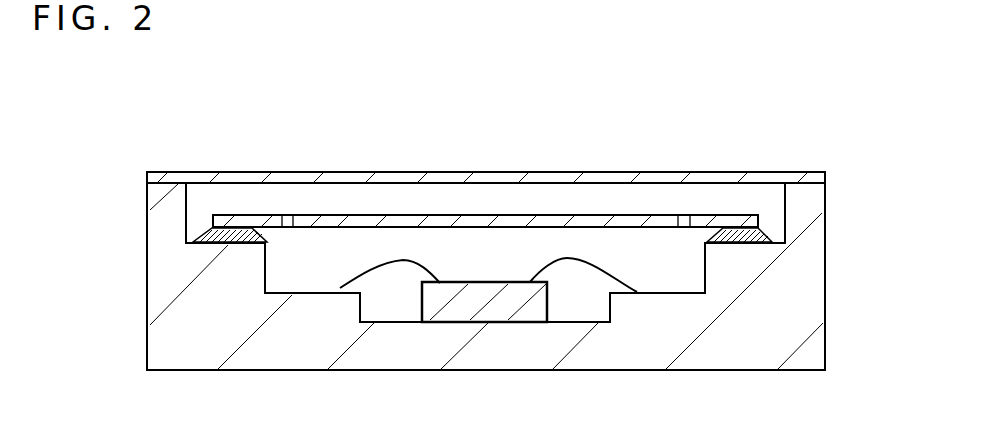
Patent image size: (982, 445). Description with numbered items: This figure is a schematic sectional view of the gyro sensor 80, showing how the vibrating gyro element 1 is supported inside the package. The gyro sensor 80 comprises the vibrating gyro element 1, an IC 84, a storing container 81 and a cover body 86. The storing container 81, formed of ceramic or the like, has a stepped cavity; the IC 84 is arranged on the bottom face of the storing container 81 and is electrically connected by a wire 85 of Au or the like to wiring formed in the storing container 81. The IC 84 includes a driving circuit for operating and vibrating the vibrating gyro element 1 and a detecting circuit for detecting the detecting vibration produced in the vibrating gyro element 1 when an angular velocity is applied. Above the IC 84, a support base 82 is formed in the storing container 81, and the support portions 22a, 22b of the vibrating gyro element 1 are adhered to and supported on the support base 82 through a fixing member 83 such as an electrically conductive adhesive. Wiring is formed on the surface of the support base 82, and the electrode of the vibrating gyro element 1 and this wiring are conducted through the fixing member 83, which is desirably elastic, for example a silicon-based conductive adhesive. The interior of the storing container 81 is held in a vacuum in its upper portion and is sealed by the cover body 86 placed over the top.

The vibrating gyro element 1 is at (585, 208).
The support portion 22a is at (717, 227).
The support portion 22b is at (242, 227).
The gyro sensor 80 is at (798, 123).
The storing container 81 is at (825, 340).
The support base 82 is at (235, 262).
The fixing member 83 is at (186, 234).
The IC 84 is at (480, 282).
The wire 85 is at (341, 285).
The cover body 86 is at (482, 182).